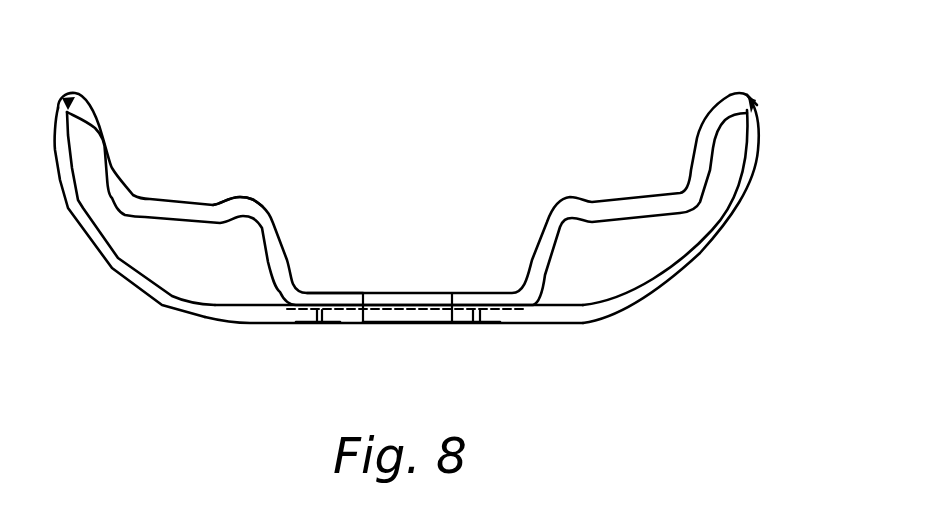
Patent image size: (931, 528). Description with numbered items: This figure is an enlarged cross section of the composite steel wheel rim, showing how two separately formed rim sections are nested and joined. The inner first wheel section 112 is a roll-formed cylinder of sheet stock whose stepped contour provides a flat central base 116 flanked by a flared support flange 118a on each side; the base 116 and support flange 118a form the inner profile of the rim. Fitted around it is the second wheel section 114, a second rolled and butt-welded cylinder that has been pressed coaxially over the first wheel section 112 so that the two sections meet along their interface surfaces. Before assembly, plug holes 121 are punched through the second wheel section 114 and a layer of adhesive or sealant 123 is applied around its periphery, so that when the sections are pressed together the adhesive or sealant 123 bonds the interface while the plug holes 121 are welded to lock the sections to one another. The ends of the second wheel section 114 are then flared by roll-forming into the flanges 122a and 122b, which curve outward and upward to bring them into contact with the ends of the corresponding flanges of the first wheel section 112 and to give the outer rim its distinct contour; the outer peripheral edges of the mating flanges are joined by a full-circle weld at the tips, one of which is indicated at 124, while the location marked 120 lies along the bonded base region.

The first wheel section 112 is at (262, 195).
The second wheel section 114 is at (628, 323).
The base 116 is at (343, 292).
The support flange 118a is at (150, 197).
The right base connector / pin 120 is at (492, 323).
The plug holes 121 is at (310, 325).
The flange 122a is at (165, 307).
The flange 122b is at (722, 240).
The adhesive or sealant 123 is at (433, 322).
The tip junction 124 is at (754, 96).